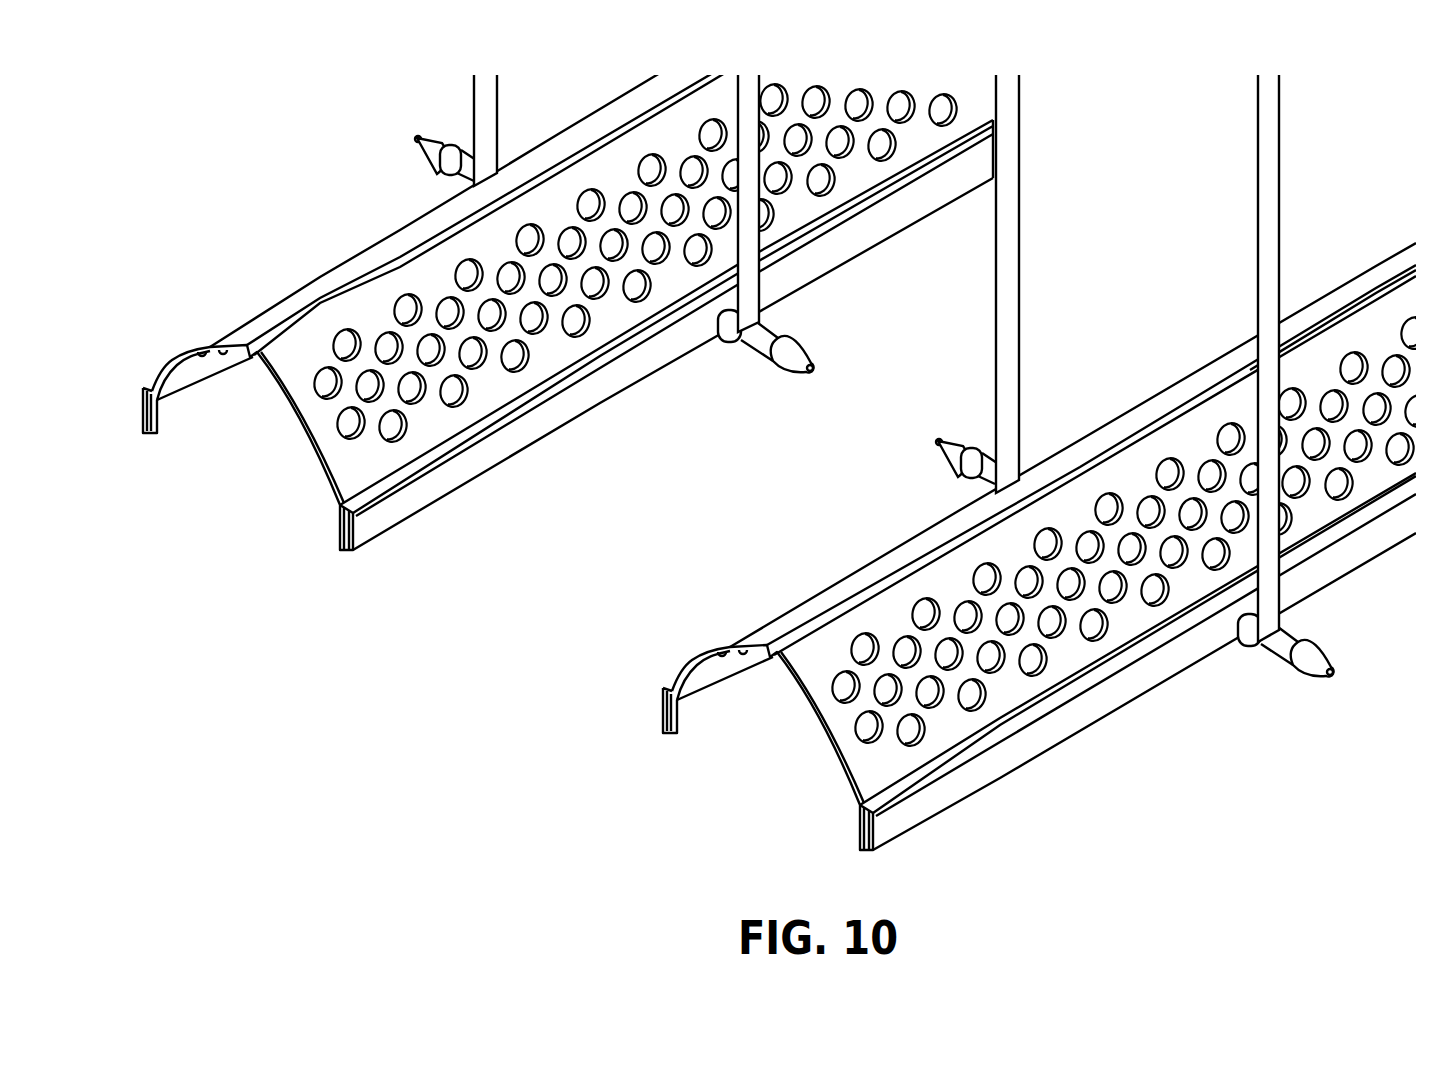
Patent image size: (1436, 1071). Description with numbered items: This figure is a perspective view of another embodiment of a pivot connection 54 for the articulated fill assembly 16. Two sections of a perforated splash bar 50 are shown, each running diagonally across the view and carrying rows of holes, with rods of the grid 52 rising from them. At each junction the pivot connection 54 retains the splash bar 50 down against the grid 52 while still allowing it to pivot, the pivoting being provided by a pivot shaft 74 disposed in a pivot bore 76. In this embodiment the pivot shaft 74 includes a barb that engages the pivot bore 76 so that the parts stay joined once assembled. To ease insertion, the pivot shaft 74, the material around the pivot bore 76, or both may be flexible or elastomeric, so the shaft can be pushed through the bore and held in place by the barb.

The articulated fill assembly 16 is at (789, 455).
The splash bar 50 is at (317, 450).
The grid 52 is at (1273, 196).
The pivot connection 54 is at (988, 419).
The pivot shaft 74 is at (806, 356).
The pivot bore 76 is at (720, 317).